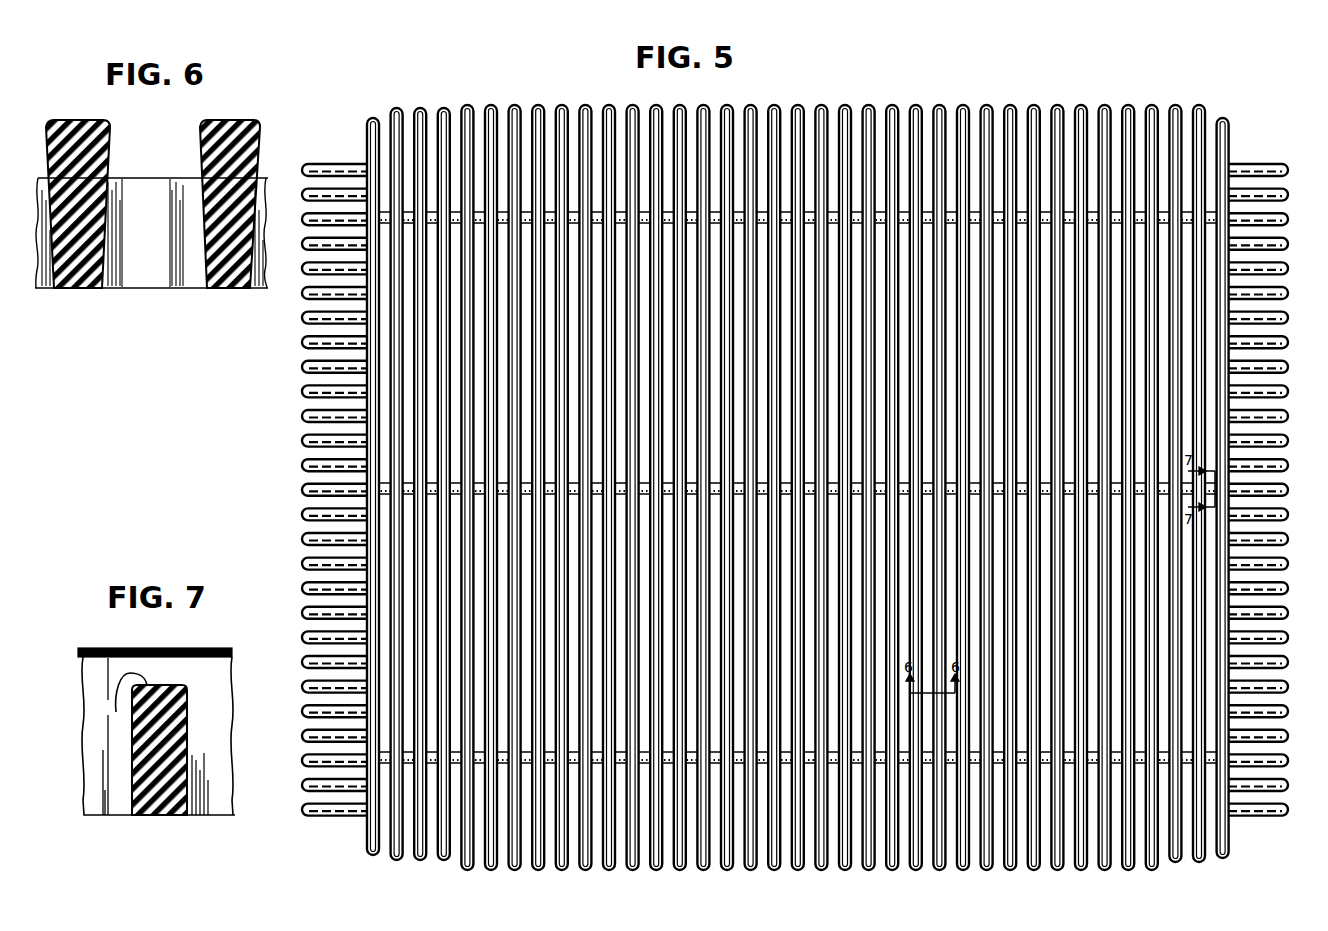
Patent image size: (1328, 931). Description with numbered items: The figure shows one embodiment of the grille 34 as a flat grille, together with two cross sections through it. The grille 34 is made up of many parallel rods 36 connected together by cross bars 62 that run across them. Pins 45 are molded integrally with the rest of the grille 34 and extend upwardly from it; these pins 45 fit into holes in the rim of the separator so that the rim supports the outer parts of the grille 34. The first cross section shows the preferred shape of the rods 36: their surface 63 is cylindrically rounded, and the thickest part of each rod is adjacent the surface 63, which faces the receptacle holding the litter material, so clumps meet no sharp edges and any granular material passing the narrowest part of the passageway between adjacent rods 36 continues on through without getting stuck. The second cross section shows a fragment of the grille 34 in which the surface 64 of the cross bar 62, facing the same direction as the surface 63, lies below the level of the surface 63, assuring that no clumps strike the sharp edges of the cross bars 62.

In FIG. 5, the grille 34 is at (305, 540).
In FIG. 5, the rods 36 is at (468, 861).
In FIG. 6, the rods 36 is at (105, 157).
In FIG. 7, the rods 36 is at (90, 731).
In FIG. 5, the pins 45 is at (376, 118).
In FIG. 5, the cross bars 62 is at (478, 212).
In FIG. 6, the cross bars 62 is at (150, 184).
In FIG. 7, the cross bars 62 is at (190, 757).
In FIG. 6, the surface 63 is at (78, 127).
In FIG. 7, the surface 63 is at (170, 648).
In FIG. 7, the surface 64 is at (127, 703).